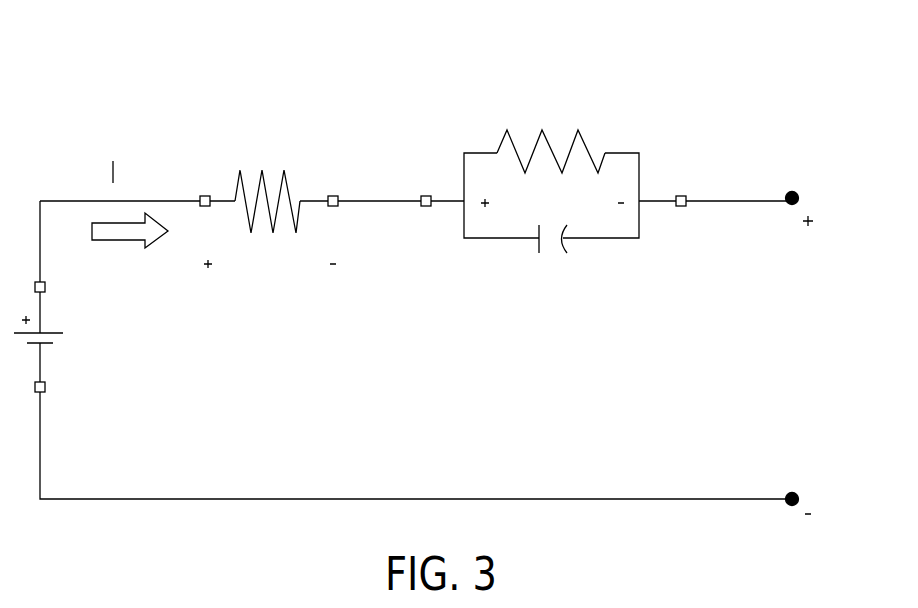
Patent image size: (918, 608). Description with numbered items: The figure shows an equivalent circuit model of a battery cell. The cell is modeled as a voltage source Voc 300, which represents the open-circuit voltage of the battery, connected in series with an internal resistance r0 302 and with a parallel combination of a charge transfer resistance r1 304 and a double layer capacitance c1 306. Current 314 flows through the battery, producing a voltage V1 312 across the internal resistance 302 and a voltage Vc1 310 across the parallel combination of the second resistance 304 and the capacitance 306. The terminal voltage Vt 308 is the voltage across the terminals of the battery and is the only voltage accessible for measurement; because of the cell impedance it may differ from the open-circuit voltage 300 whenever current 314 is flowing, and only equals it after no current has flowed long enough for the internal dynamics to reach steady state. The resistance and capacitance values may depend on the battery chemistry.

The voltage source Voc 300 is at (54, 332).
The internal resistance r0 302 is at (237, 181).
The charge transfer resistance r1 304 is at (595, 131).
The double layer capacitance c1 306 is at (536, 249).
The terminal voltage Vt 308 is at (800, 330).
The voltage Vc1 310 is at (530, 200).
The voltage V1 312 is at (270, 280).
The current 314 is at (108, 172).